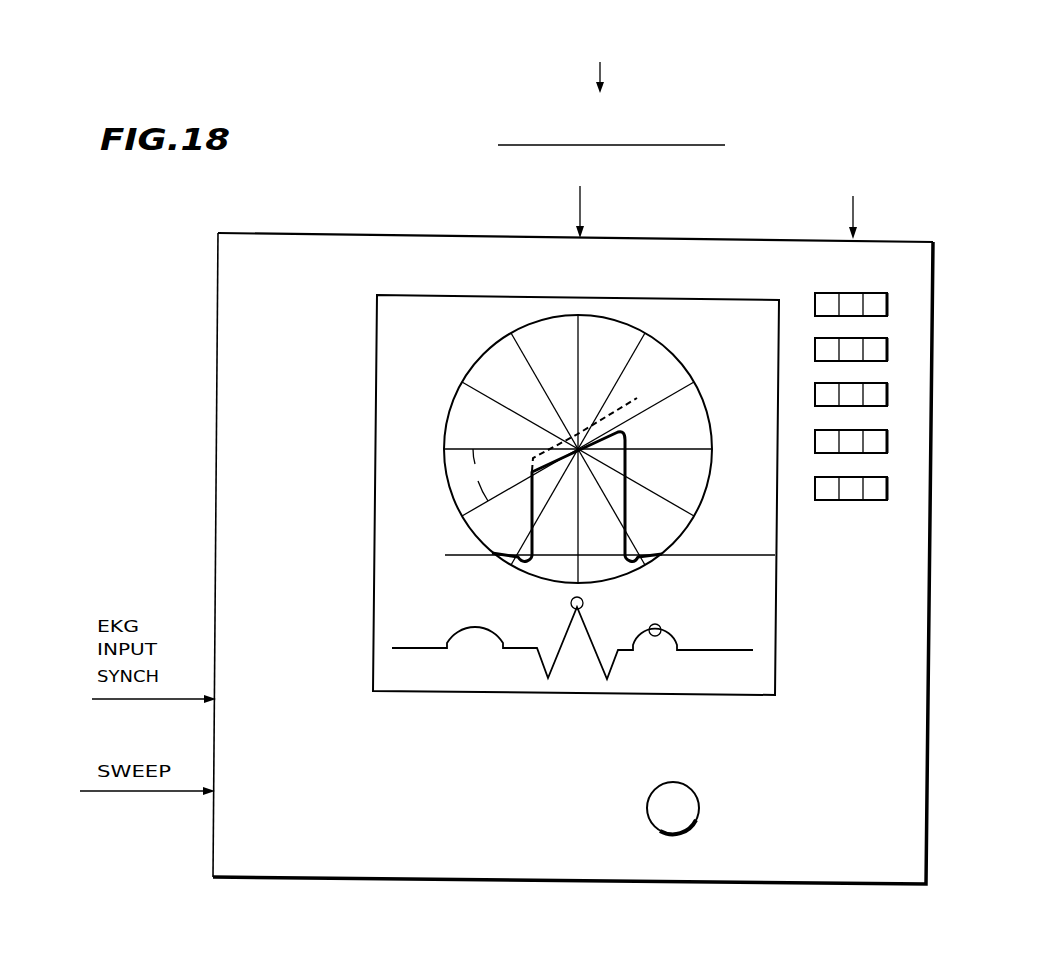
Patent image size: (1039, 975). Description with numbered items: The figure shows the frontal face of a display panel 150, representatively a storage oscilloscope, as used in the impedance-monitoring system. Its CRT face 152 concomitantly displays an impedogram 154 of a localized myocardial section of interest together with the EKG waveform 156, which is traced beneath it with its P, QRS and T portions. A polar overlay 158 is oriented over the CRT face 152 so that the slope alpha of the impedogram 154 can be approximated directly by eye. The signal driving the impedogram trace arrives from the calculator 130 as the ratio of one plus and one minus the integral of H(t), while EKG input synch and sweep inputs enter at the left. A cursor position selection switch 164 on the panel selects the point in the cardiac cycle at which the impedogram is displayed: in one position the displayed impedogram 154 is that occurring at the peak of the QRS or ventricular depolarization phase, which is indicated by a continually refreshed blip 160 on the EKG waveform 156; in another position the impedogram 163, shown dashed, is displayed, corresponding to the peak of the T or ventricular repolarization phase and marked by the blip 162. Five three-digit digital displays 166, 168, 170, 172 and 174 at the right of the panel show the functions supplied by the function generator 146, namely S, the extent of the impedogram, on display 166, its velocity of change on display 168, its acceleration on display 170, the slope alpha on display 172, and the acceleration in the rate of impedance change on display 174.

The calculator 130 is at (625, 140).
The function generator 146 is at (894, 179).
The display panel 150 is at (786, 884).
The CRT face 152 is at (733, 581).
The impedogram 154 is at (531, 519).
The EKG waveform 156 is at (485, 612).
The polar overlay 158 is at (703, 397).
The blip 160 is at (583, 601).
The blip 162 is at (661, 628).
The impedogram 163 is at (597, 422).
The cursor position selection switch 164 is at (697, 794).
The digital display 166 is at (887, 304).
The digital display 168 is at (887, 350).
The digital display 170 is at (887, 396).
The digital display 172 is at (887, 442).
The digital display 174 is at (887, 490).